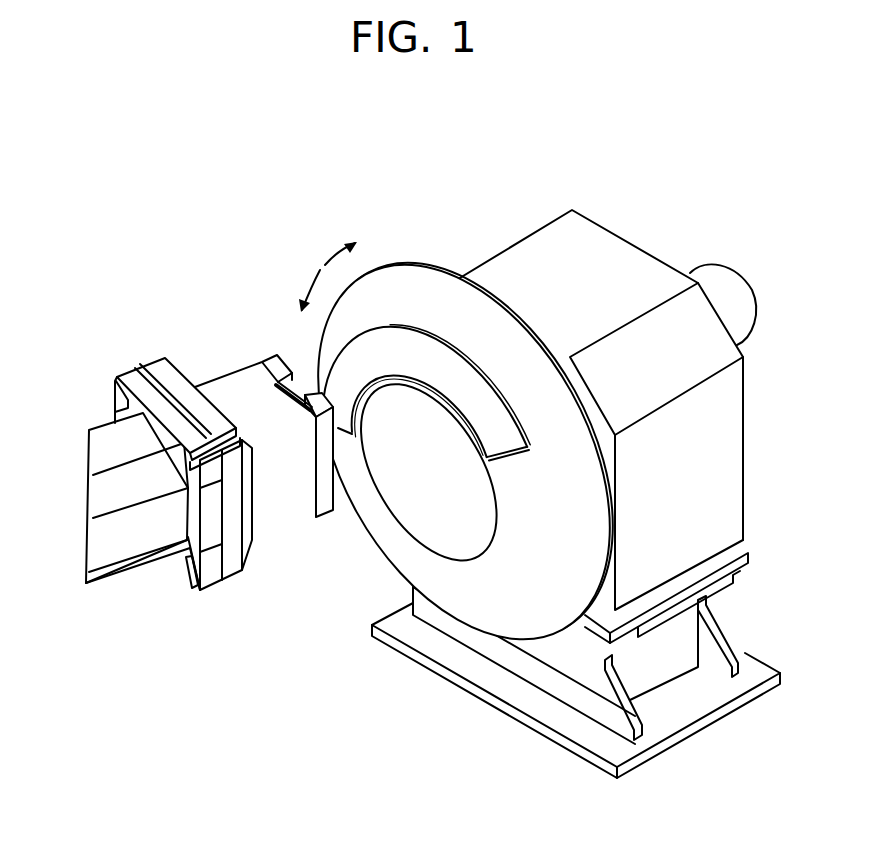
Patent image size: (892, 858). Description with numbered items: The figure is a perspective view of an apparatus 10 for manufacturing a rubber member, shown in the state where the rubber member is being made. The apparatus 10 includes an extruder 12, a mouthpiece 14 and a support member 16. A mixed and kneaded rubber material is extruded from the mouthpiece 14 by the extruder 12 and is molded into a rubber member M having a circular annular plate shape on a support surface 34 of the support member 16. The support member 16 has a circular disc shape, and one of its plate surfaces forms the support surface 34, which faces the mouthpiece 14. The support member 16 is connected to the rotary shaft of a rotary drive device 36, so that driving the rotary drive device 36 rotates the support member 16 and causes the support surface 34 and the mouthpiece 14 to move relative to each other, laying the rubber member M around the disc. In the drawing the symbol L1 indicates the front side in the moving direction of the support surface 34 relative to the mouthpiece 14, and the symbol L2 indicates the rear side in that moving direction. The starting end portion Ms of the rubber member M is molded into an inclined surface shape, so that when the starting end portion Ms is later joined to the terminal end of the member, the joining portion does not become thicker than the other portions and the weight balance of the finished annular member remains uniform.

The apparatus of manufacturing a rubber member 10 is at (448, 154).
The extruder 12 is at (145, 575).
The mouthpiece 14 is at (326, 522).
The support member 16 is at (593, 610).
The support surface 34 is at (520, 622).
The rotary drive device 36 is at (636, 262).
The rubber member M is at (463, 390).
The starting end portion Ms is at (513, 458).
The front side in moving direction L1 is at (338, 250).
The rear side in moving direction L2 is at (306, 290).